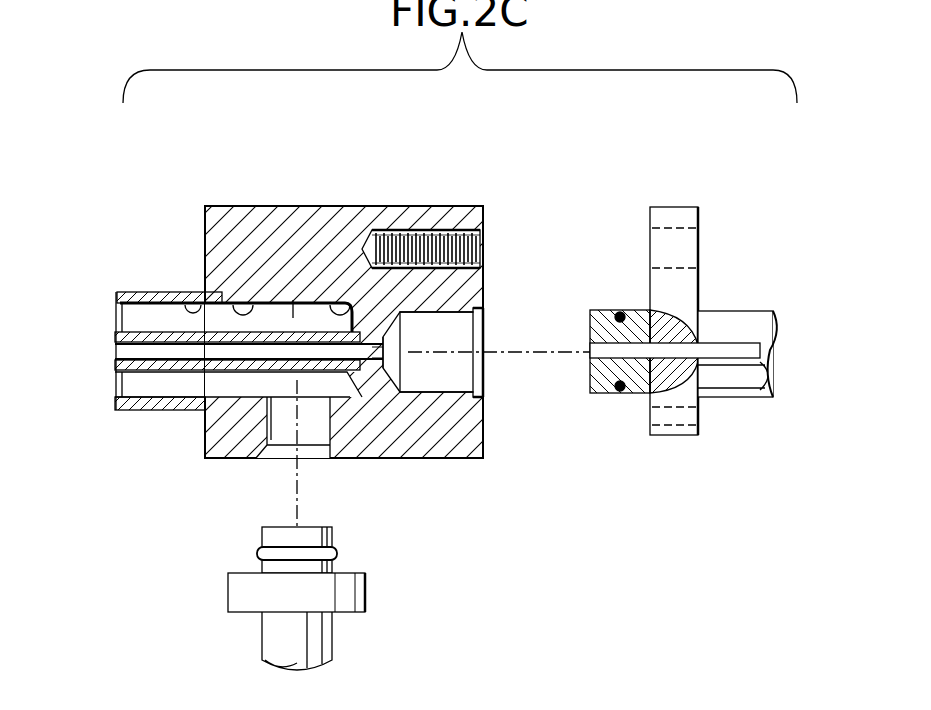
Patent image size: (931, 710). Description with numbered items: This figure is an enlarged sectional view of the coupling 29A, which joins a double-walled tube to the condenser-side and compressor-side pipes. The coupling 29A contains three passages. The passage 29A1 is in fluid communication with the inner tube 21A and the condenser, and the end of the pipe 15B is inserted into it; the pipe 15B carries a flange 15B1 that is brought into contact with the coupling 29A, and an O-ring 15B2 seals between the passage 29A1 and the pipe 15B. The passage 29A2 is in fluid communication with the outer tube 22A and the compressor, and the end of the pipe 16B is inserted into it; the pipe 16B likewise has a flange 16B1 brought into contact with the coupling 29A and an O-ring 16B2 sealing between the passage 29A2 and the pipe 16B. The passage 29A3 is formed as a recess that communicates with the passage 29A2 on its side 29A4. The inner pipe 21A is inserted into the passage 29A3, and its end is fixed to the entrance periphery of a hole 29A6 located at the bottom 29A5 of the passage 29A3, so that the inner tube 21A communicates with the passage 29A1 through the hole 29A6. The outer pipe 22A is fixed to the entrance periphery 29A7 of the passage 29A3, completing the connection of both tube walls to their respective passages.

The coupling 29A is at (341, 316).
The passage 29A1 is at (458, 313).
The passage 29A2 is at (263, 455).
The passage 29A3 is at (295, 300).
The side 29A4 is at (234, 300).
The bottom 29A5 is at (339, 300).
The hole 29A6 is at (374, 367).
The entrance periphery 29A7 is at (187, 292).
The inner tube 21A is at (128, 293).
The outer tube 22A is at (165, 292).
The pipe 15B is at (745, 311).
The flange 15B1 is at (680, 435).
The O-ring 15B2 is at (621, 394).
The pipe 16B is at (320, 640).
The flange 16B1 is at (365, 592).
The O-ring 16B2 is at (385, 548).